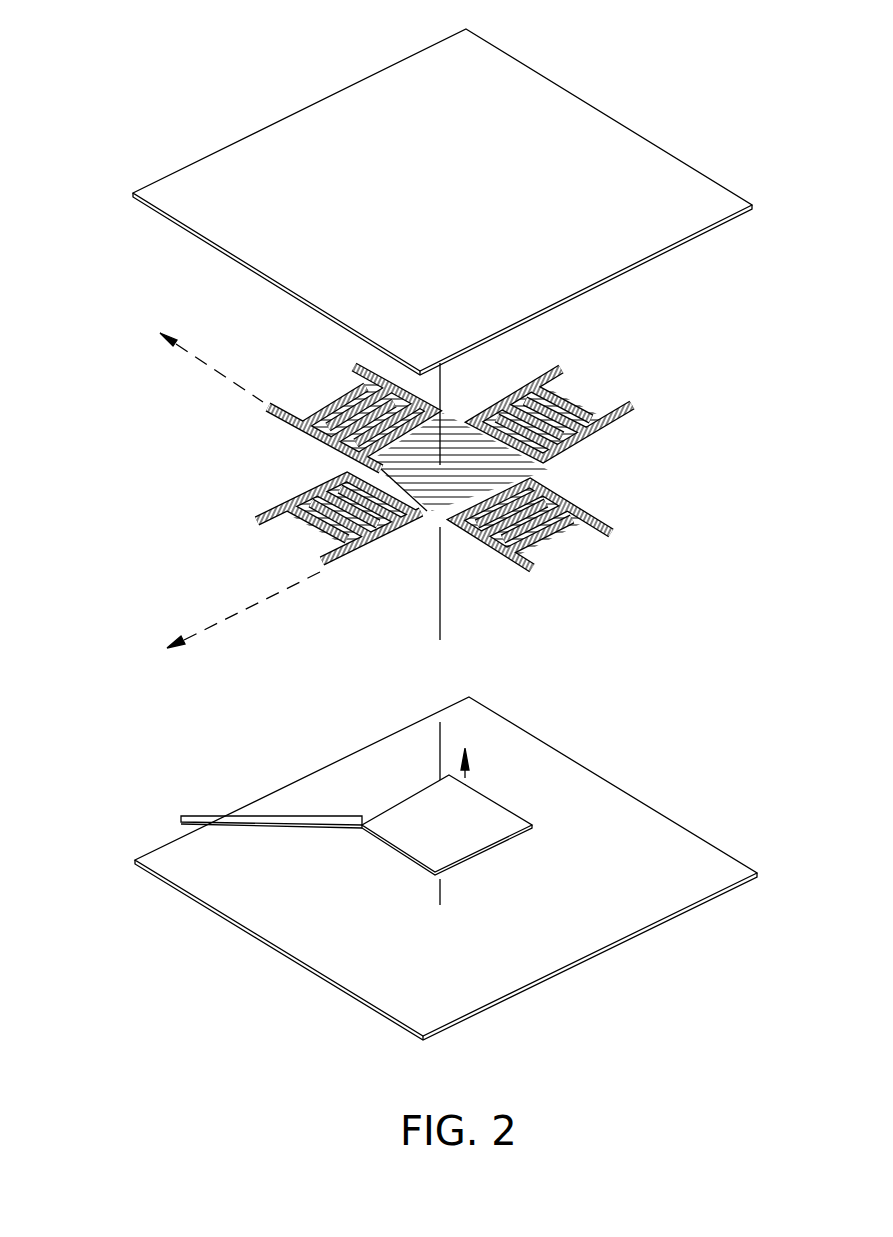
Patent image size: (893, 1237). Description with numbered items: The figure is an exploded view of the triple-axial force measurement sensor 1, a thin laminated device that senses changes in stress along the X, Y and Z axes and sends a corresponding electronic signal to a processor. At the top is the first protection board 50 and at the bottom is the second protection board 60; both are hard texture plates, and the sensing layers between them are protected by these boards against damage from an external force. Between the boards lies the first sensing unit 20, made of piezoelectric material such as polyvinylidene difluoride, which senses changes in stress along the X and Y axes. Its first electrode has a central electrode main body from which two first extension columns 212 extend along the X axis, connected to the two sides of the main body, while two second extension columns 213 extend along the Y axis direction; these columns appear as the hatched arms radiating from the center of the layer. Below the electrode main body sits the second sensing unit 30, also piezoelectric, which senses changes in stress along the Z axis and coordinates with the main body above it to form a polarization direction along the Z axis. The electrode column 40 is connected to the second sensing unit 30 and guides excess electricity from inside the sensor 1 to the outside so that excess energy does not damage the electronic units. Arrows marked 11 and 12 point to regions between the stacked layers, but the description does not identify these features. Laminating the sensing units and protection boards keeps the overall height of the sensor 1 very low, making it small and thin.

The triple-axial force measurement sensor 1 is at (97, 72).
The first protection board 50 is at (342, 112).
The first sensing unit 20 is at (188, 436).
The first extension columns 212 is at (313, 435).
The second extension columns 213 is at (565, 370).
The first gap 11 is at (680, 565).
The second gap 12 is at (622, 652).
The electrode column 40 is at (181, 819).
The second sensing unit 30 is at (483, 833).
The second protection board 60 is at (334, 975).